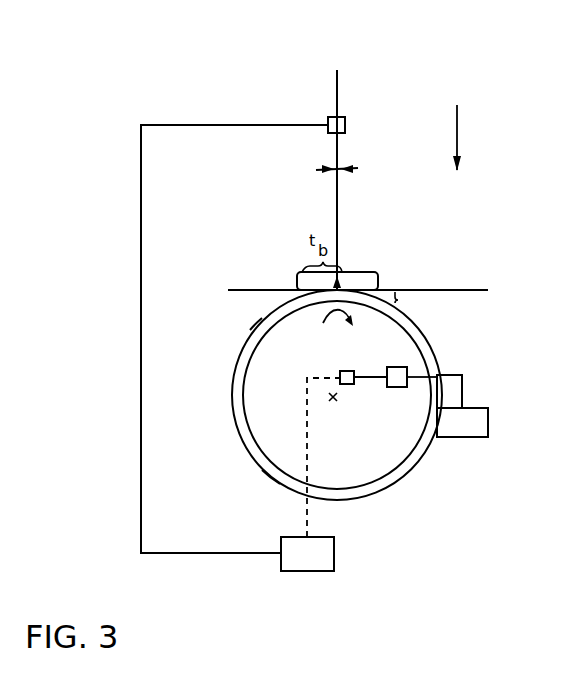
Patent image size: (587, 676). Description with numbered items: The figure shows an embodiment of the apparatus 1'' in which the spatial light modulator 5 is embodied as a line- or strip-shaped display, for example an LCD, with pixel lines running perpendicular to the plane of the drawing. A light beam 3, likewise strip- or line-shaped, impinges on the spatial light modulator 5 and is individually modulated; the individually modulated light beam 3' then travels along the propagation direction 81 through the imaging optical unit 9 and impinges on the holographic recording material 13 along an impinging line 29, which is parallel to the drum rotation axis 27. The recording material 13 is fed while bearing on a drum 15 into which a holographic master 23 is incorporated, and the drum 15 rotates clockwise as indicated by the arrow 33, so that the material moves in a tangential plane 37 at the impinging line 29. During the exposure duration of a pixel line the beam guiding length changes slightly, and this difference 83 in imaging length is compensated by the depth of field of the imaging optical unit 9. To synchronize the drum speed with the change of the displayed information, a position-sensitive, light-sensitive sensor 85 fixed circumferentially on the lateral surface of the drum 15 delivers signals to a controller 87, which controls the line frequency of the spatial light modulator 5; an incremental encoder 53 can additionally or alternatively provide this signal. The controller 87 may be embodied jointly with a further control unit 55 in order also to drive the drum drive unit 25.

The device for producing a tubular body 1'' is at (112, 39).
The light beam 3 is at (347, 166).
The spatial light modulator 5 is at (345, 121).
The individually modulated light beam 3' is at (362, 199).
The imaging optical unit 9 is at (345, 170).
The propagation direction 81 is at (457, 133).
The impinging line 29 is at (340, 289).
The difference in the imaging length 83 is at (400, 299).
The tangential plane 37 is at (474, 291).
The holographic recording material 13 is at (246, 340).
The drum 15 is at (252, 360).
The holographic master 23 is at (257, 325).
The arrow 33 is at (327, 320).
The incremental encoder 53 is at (351, 371).
The further control unit 55 is at (407, 373).
The drum drive unit 25 is at (460, 437).
The drum rotation axis 27 is at (332, 402).
The position-sensitive, light-sensitive sensor 85 is at (268, 464).
The controller 87 is at (335, 558).